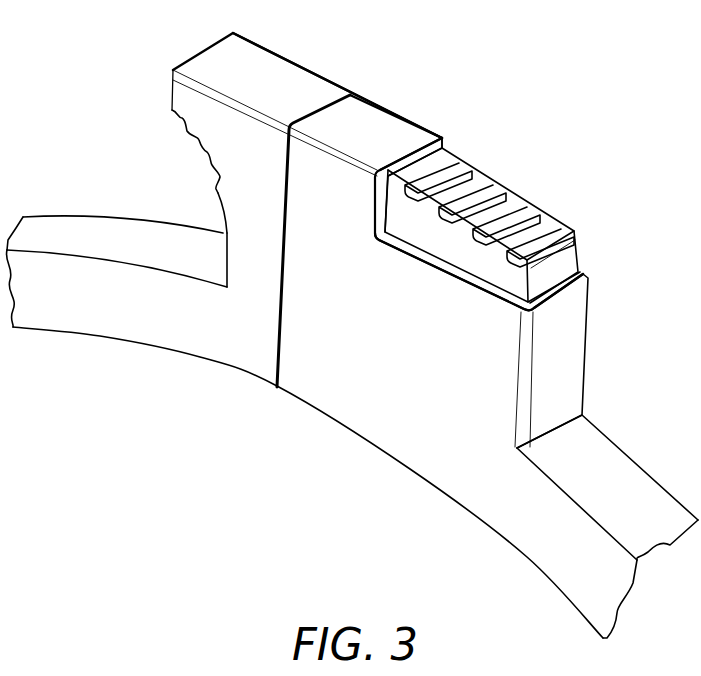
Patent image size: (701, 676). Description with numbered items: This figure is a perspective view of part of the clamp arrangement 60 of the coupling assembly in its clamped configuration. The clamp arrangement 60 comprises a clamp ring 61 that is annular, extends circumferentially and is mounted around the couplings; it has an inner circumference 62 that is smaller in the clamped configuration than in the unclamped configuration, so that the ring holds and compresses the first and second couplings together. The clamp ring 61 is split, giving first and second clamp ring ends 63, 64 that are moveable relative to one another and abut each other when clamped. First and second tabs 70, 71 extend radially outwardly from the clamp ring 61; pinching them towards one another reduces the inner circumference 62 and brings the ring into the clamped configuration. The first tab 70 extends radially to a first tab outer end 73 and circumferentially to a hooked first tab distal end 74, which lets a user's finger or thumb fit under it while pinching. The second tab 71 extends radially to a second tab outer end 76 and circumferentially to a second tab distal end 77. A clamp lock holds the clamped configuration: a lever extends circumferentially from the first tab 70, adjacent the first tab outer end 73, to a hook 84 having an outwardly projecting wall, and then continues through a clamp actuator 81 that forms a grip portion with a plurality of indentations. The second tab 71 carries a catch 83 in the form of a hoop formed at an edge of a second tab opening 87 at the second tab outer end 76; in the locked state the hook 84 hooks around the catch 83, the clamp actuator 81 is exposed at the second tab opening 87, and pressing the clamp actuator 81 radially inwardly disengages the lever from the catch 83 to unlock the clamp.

The clamp arrangement 60 is at (195, 458).
The clamp ring 61 is at (540, 552).
The inner circumference 62 is at (413, 470).
The first clamp ring end 63 is at (280, 373).
The second clamp ring end 64 is at (290, 388).
The first tab 70 is at (267, 219).
The second tab 71 is at (390, 353).
The first tab outer end 73 is at (272, 65).
The first tab distal end 74 is at (218, 193).
The second tab outer end 76 is at (368, 115).
The second tab distal end 77 is at (568, 349).
The clamp actuator 81 is at (533, 218).
The catch 83 is at (413, 150).
The hook 84 is at (386, 212).
The second tab opening 87 is at (472, 283).